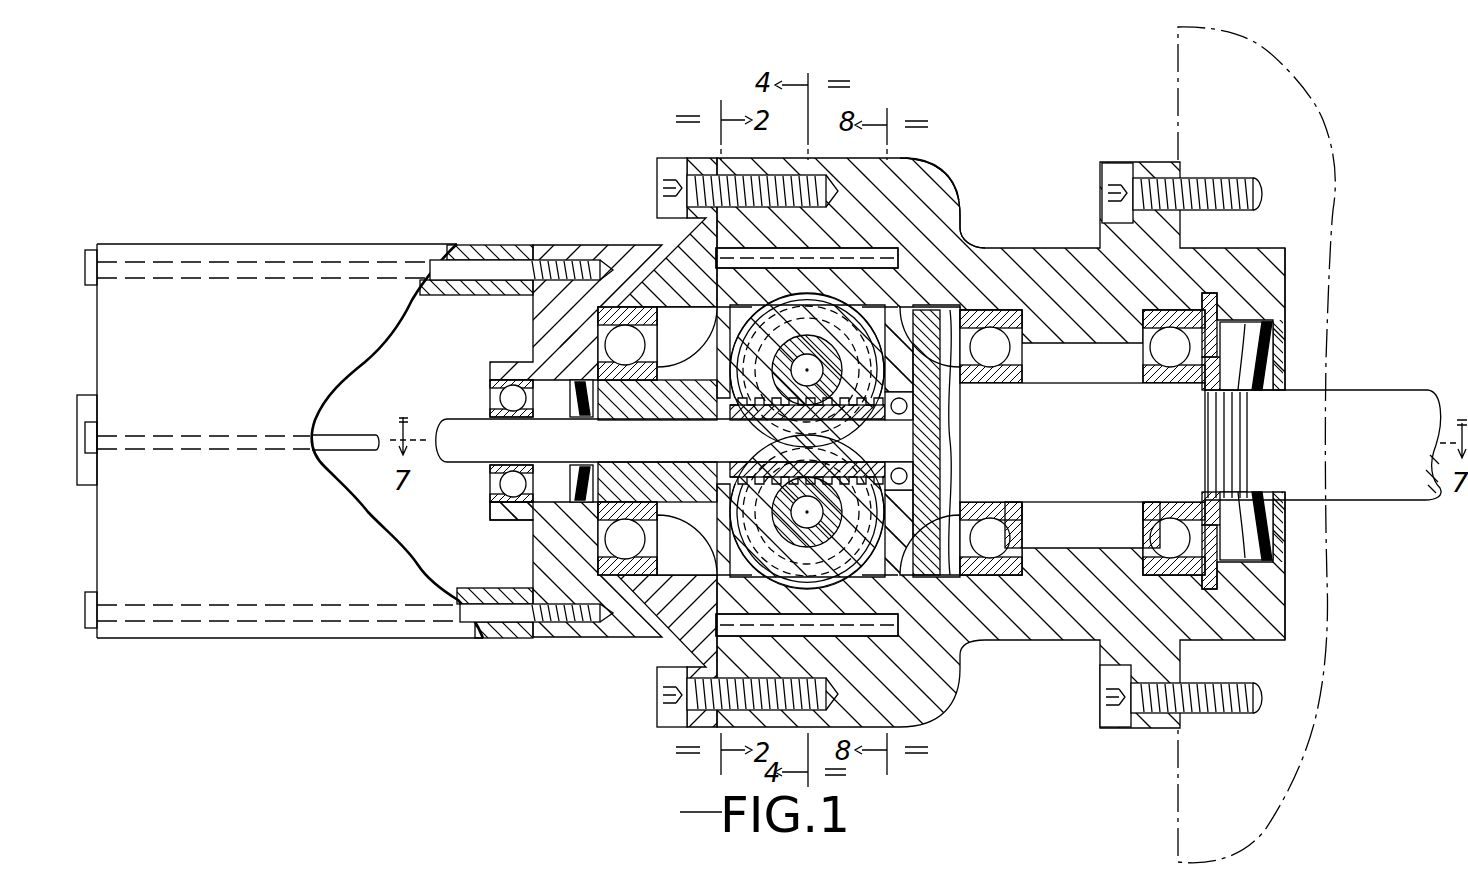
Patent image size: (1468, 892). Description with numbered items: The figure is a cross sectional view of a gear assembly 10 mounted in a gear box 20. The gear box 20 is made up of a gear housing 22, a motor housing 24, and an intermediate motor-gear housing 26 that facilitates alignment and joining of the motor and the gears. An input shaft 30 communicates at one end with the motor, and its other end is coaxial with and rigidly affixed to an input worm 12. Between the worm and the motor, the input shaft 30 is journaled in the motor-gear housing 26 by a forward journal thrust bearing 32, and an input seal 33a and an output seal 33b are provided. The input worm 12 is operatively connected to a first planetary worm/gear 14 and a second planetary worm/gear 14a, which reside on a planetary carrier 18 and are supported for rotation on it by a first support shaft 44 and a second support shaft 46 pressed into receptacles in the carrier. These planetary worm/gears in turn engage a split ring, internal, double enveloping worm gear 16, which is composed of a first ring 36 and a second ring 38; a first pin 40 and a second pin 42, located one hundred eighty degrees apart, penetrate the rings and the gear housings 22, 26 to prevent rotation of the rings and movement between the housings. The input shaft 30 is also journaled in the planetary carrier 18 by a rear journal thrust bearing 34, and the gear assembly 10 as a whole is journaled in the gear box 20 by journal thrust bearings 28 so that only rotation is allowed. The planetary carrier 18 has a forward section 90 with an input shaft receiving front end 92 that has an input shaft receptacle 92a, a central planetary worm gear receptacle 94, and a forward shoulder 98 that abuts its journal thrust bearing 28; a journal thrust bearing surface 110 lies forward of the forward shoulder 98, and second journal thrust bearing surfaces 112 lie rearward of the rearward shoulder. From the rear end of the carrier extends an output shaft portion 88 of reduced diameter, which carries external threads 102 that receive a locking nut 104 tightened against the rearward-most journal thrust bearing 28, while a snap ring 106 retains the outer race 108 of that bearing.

The gear assembly 10 is at (955, 244).
The input worm 12 is at (708, 448).
The first planetary worm/gear 14 is at (718, 537).
The second planetary worm/gear 14a is at (860, 348).
The split ring, internal, double enveloping worm gear 16 is at (833, 607).
The planetary carrier/output shaft 18 is at (718, 311).
The gear box 20 is at (953, 183).
The gear housing 22 is at (933, 160).
The motor housing 24 is at (490, 245).
The intermediate motor-gear housing 26 is at (612, 245).
The journal thrust bearings 28 is at (657, 347).
The input shaft 30 is at (452, 423).
The forward journal thrust bearing 32 is at (510, 398).
The input seal 33a is at (567, 397).
The output seal 33b is at (1285, 372).
The rear journal thrust bearing 34 is at (948, 410).
The first ring 36 is at (887, 300).
The second ring 38 is at (735, 290).
The first pin 40 is at (858, 252).
The second pin 42 is at (873, 636).
The first support shaft 44 is at (845, 576).
The second support shaft 46 is at (807, 368).
The output shaft portion 88 is at (1090, 504).
The forward section 90 is at (712, 352).
The input shaft receiving front end 92 is at (573, 387).
The input shaft receptacle 92a is at (628, 448).
The central planetary worm gear receptacle 94 is at (905, 394).
The forward shoulder 98 is at (585, 355).
The external threads 102 is at (1234, 433).
The locking nut 104 is at (1278, 296).
The snap ring 106 is at (1230, 325).
The outer race 108 is at (1170, 312).
The journal thrust bearing surface 110 is at (540, 520).
The second journal thrust bearing surfaces 112 is at (1000, 502).